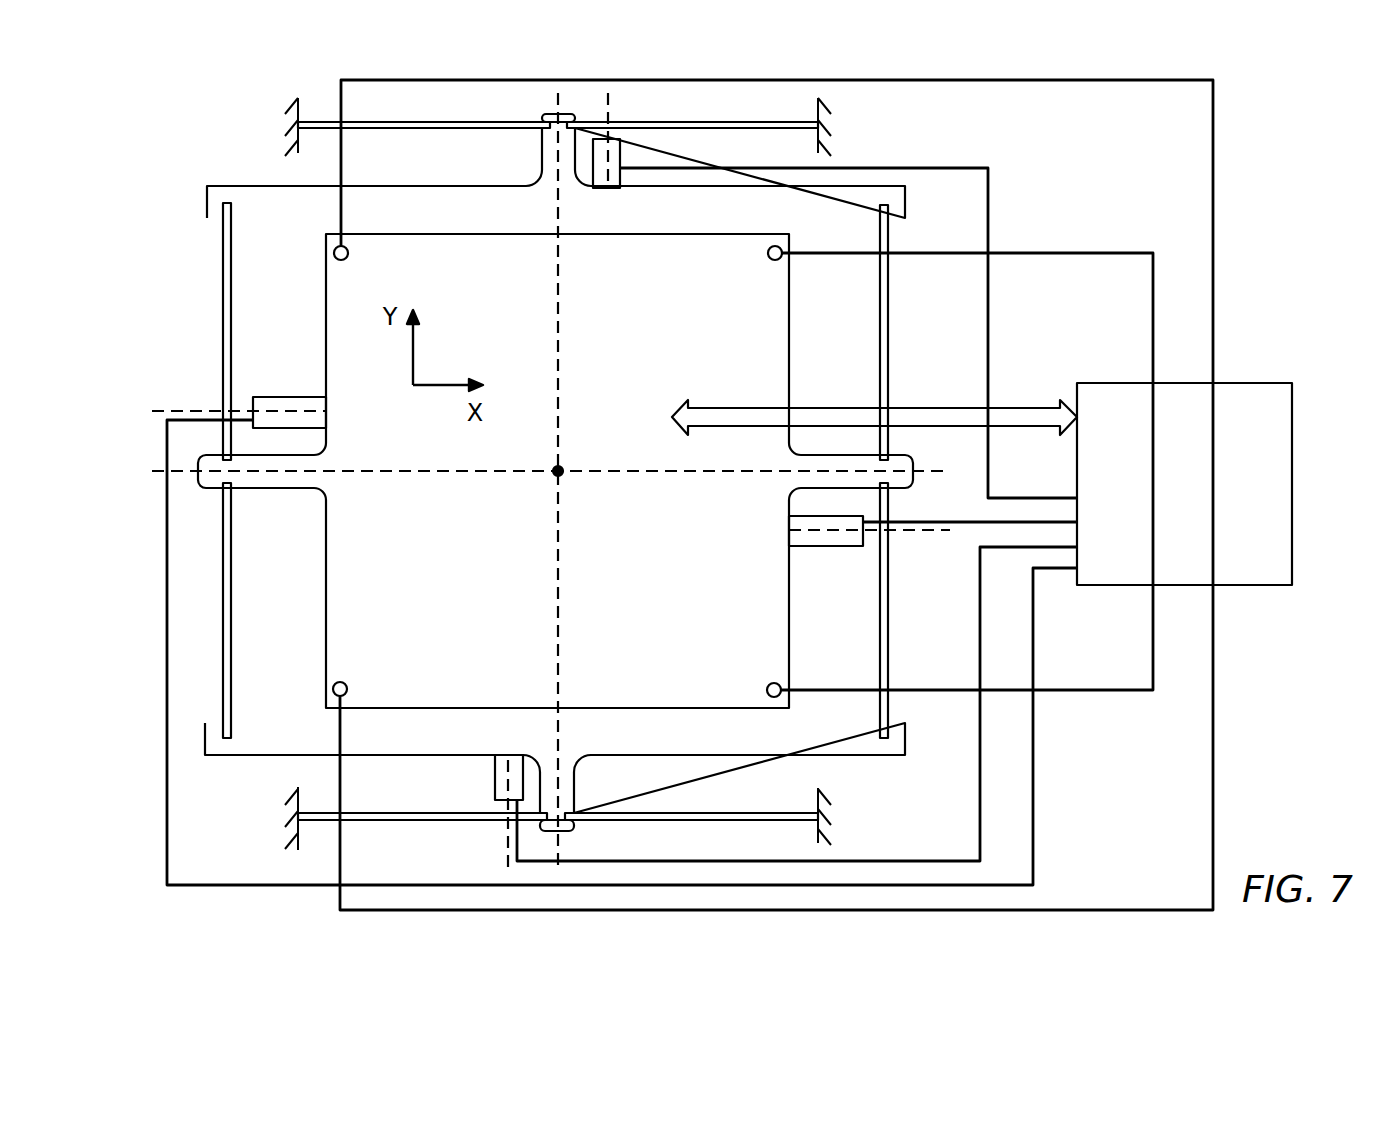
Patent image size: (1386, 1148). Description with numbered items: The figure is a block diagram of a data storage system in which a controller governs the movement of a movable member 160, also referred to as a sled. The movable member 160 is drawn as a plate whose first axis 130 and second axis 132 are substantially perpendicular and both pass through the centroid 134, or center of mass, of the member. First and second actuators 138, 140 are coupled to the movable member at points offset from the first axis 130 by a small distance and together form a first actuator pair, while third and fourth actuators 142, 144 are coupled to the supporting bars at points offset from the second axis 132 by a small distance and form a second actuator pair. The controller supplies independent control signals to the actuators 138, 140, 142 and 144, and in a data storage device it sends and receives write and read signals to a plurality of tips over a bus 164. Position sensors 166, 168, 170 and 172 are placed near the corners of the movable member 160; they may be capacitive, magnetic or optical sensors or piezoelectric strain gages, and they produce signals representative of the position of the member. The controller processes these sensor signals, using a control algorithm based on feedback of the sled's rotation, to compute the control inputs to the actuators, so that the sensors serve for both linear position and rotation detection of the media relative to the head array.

The first axis 130 is at (656, 473).
The second axis 132 is at (560, 352).
The centroid 134 is at (556, 474).
The first actuator 138 is at (286, 397).
The second actuator 140 is at (830, 547).
The third actuator 142 is at (620, 155).
The fourth actuator 144 is at (495, 783).
The movable member 160 is at (650, 604).
The bus 164 is at (932, 408).
The position sensor 166 is at (348, 254).
The position sensor 168 is at (768, 258).
The position sensor 170 is at (347, 686).
The position sensor 172 is at (766, 690).